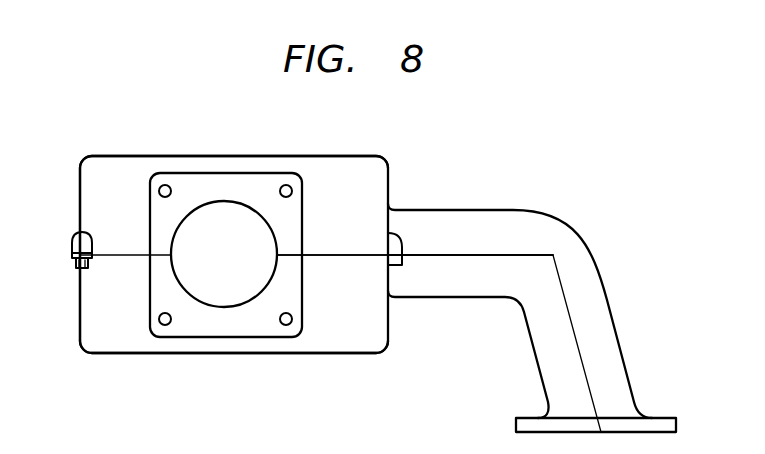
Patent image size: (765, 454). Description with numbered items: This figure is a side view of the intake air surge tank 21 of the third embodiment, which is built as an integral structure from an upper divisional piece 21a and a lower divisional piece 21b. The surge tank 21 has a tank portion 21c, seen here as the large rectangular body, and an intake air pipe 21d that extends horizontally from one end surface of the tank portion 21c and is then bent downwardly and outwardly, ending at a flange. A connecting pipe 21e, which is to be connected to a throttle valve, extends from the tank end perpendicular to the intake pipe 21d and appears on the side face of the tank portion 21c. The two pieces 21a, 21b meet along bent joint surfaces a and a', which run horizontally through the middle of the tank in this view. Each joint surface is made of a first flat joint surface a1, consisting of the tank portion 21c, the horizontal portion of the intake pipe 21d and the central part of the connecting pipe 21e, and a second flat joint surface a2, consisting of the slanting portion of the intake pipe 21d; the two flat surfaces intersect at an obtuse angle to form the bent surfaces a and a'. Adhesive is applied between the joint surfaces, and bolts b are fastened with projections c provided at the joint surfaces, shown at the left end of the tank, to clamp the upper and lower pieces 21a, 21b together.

The intake air surge tank 21 is at (347, 156).
The upper divisional piece 21a is at (184, 156).
The lower divisional piece 21b is at (200, 354).
The tank portion 21c is at (112, 162).
The intake air pipe 21d is at (621, 345).
The connecting pipe 21e is at (281, 328).
The bent joint surface a is at (316, 240).
The bent joint surface a' is at (415, 274).
The first flat joint surface a1 is at (465, 253).
The second joint surface a2 is at (573, 314).
The bolt b is at (75, 268).
The projection c is at (73, 241).